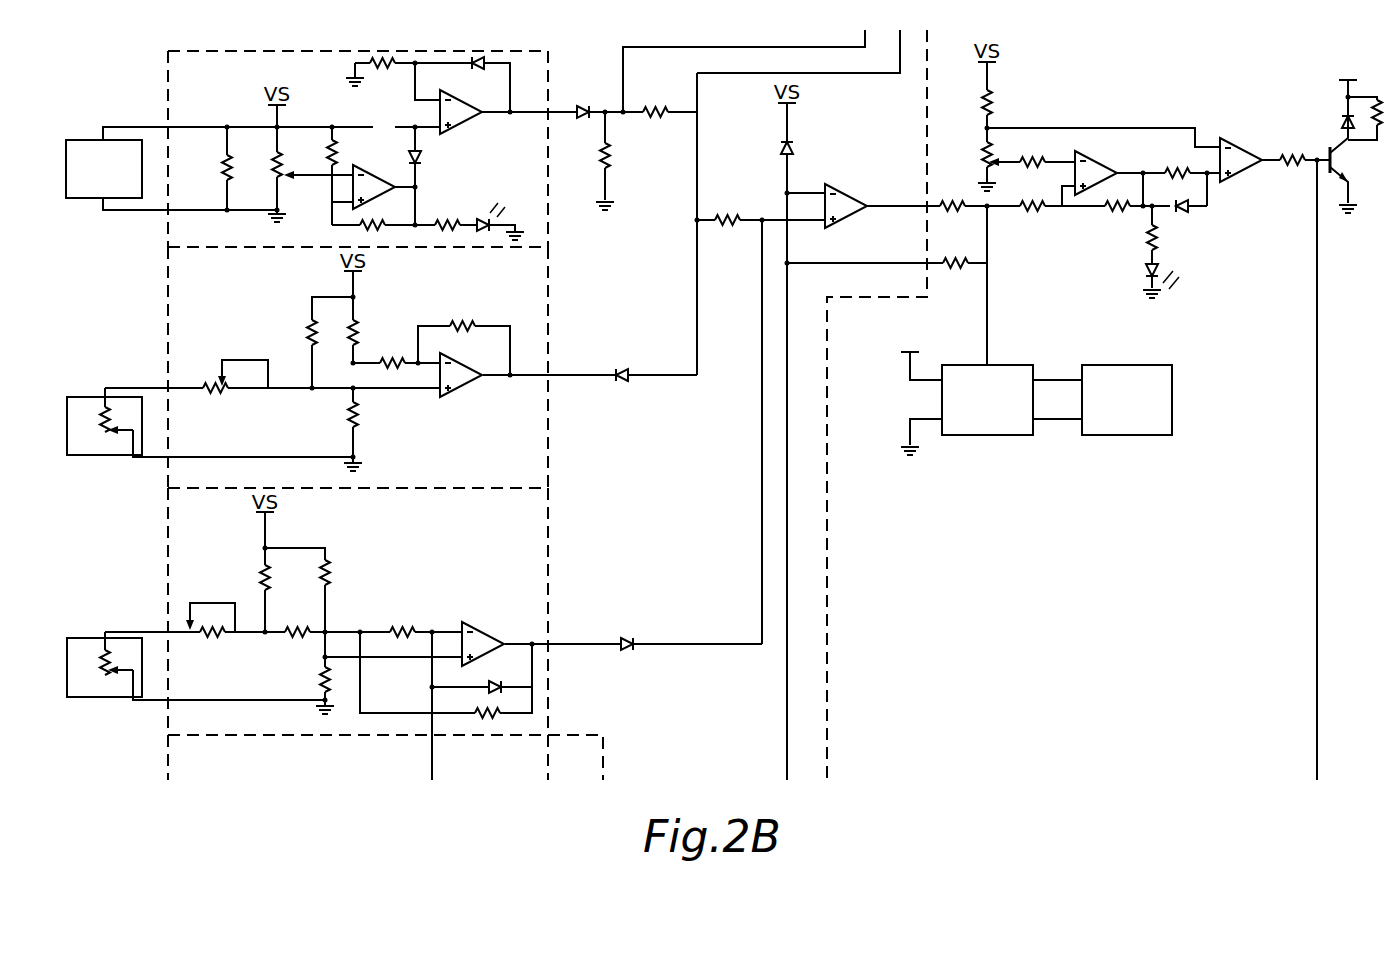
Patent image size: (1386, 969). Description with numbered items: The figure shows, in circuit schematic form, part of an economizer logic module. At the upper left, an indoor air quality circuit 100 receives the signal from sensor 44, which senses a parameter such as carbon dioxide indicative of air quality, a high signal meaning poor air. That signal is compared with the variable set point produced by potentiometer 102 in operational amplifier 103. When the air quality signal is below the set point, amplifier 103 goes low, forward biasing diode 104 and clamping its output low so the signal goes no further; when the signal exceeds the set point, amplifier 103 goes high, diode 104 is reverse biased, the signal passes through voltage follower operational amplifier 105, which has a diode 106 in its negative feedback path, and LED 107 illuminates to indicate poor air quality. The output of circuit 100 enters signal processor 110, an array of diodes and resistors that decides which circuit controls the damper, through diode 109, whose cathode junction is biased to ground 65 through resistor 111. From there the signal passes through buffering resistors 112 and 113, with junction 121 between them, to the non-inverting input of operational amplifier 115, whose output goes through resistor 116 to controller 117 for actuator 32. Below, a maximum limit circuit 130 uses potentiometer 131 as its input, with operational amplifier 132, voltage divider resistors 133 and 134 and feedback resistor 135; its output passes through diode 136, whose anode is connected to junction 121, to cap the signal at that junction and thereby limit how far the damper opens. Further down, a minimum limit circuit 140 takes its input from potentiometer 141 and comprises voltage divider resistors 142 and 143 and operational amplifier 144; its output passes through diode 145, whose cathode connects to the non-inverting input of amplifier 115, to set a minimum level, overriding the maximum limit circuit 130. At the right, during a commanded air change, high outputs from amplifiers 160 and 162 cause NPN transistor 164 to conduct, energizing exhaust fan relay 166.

The indoor air quality circuit 100 is at (168, 62).
The sensor 44 is at (83, 140).
The potentiometer 102 is at (288, 172).
The operational amplifier 103 is at (389, 166).
The diode 104 is at (426, 155).
The voltage follower operational amplifier 105 is at (465, 125).
The diode 106 is at (476, 69).
The LED 107 is at (482, 217).
The diode 109 is at (578, 105).
The signal processor 110 is at (623, 108).
The resistor 111 is at (597, 166).
The buffering resistor 112 is at (653, 119).
The ground 65 is at (617, 201).
The junction 121 is at (697, 186).
The buffering resistor 113 is at (724, 225).
The operational amplifier 115 is at (839, 186).
The resistor 116 is at (950, 199).
The amplifier 160 is at (1102, 168).
The amplifier 162 is at (1245, 151).
The NPN transistor 164 is at (1326, 152).
The exhaust fan relay 166 is at (1358, 148).
The controller 117 is at (1010, 365).
The actuator 32 is at (1172, 394).
The maximum limit circuit 130 is at (168, 302).
The potentiometer 131 is at (91, 397).
The voltage divider resistor 133 is at (359, 319).
The feedback resistor 135 is at (471, 319).
The voltage divider resistor 134 is at (358, 416).
The operational amplifier 132 is at (467, 386).
The diode 136 is at (625, 370).
The minimum limit circuit 140 is at (168, 535).
The potentiometer 141 is at (91, 638).
The voltage divider resistor 142 is at (329, 573).
The voltage divider resistor 143 is at (324, 671).
The operational amplifier 144 is at (490, 627).
The diode 145 is at (626, 637).